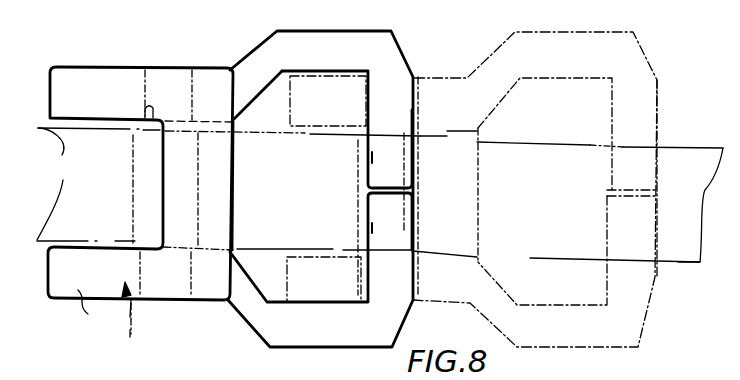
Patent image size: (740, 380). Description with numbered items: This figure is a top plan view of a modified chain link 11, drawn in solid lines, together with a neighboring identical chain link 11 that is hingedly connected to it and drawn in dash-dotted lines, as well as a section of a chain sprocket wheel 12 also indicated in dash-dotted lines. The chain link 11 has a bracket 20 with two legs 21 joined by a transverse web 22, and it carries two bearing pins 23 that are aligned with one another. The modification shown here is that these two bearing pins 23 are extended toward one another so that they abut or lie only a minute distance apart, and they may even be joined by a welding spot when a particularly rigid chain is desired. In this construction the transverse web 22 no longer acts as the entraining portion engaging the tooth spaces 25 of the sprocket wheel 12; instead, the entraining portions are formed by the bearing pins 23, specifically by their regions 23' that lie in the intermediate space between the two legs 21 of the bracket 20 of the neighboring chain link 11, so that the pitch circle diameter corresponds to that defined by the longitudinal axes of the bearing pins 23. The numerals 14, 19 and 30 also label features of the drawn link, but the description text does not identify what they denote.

The chain link 11 is at (101, 62).
The chain sprocket wheel 12 is at (678, 263).
The housing wall 14 is at (267, 50).
The hidden edge 19 is at (143, 130).
The bracket 20 is at (224, 208).
The legs 21 is at (130, 78).
The transverse web 22 is at (229, 160).
The bearing pins 23 is at (339, 199).
The regions of the bearing pins 23' is at (449, 195).
The tooth spaces 25 is at (616, 166).
The inclined wall 30 is at (247, 83).